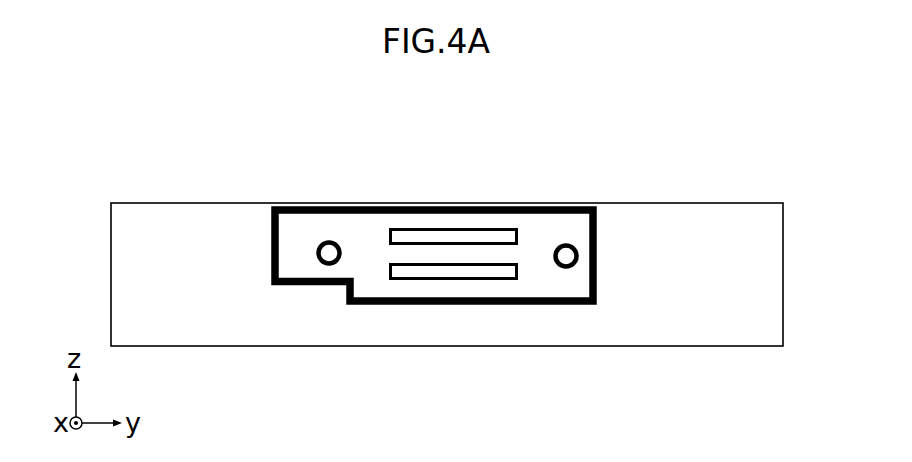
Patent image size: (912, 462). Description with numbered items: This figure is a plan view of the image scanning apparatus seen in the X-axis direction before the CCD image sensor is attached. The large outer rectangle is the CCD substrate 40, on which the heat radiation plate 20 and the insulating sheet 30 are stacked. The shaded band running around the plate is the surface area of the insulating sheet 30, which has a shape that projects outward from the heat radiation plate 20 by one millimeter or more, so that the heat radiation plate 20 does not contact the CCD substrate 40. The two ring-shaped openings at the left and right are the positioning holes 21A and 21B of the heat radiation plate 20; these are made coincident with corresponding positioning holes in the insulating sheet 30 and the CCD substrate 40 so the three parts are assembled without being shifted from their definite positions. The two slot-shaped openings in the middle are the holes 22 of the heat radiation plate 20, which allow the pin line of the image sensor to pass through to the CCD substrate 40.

The CCD substrate 40 is at (173, 346).
The heat radiation plate 20 is at (298, 272).
The insulating sheet 30 is at (272, 255).
The positioning hole 21A is at (329, 250).
The positioning hole 21B is at (569, 252).
The hole 22 is at (465, 237).